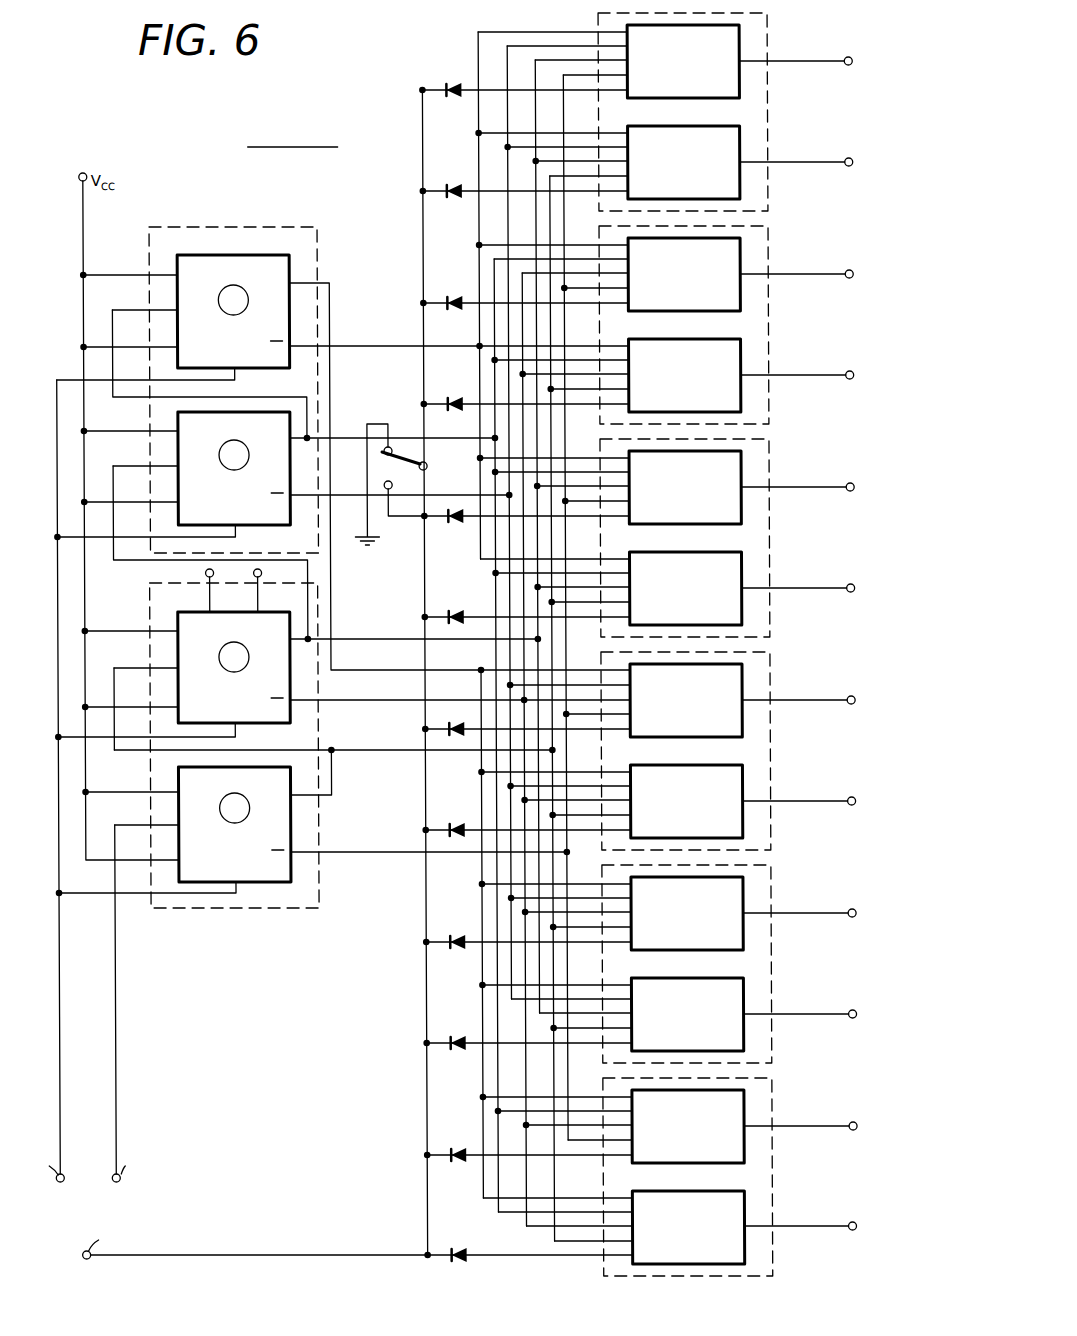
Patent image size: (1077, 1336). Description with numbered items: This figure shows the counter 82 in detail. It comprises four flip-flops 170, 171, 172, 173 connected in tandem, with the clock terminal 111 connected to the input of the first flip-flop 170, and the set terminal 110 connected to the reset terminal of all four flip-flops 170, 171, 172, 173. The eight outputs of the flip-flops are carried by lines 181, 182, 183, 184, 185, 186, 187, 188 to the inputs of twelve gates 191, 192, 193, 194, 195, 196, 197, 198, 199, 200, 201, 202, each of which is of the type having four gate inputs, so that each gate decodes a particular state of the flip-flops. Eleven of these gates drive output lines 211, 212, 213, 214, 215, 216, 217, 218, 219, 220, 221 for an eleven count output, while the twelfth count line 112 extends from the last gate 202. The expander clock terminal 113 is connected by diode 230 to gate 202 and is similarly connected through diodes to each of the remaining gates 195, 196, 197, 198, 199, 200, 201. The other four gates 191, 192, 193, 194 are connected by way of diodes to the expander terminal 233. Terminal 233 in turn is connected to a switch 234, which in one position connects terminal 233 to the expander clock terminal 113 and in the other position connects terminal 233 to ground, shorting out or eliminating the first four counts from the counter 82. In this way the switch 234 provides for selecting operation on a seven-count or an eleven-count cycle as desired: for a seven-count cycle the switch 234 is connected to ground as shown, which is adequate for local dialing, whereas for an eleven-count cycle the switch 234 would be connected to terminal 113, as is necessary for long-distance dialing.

The counter 82 is at (300, 181).
The set terminal 110 is at (56, 1182).
The clock terminal 111 is at (115, 1180).
The twelfth count line 112 is at (849, 1230).
The expander clock terminal 113 is at (80, 1259).
The flip-flop 170 is at (213, 856).
The flip-flop 171 is at (213, 709).
The flip-flop 172 is at (214, 496).
The flip-flop 173 is at (214, 340).
The line 181 is at (343, 857).
The line 182 is at (343, 754).
The line 183 is at (343, 705).
The line 184 is at (390, 637).
The line 185 is at (370, 496).
The line 186 is at (343, 436).
The line 187 is at (342, 345).
The line 188 is at (330, 290).
The gate 191 is at (660, 84).
The gate 192 is at (660, 185).
The gate 193 is at (660, 297).
The gate 194 is at (660, 398).
The gate 195 is at (660, 510).
The gate 196 is at (660, 611).
The gate 197 is at (660, 723).
The gate 198 is at (660, 824).
The gate 199 is at (660, 936).
The gate 200 is at (660, 1037).
The gate 201 is at (660, 1149).
The gate 202 is at (660, 1250).
The output line 211 is at (846, 58).
The output line 212 is at (846, 159).
The output line 213 is at (846, 271).
The output line 214 is at (846, 372).
The output line 215 is at (846, 484).
The output line 216 is at (846, 585).
The output line 217 is at (846, 697).
The output line 218 is at (846, 798).
The output line 219 is at (846, 910).
The output line 220 is at (846, 1011).
The output line 221 is at (846, 1123).
The diode 230 is at (463, 1259).
The expander terminal 233 is at (427, 456).
The switch 234 is at (412, 495).